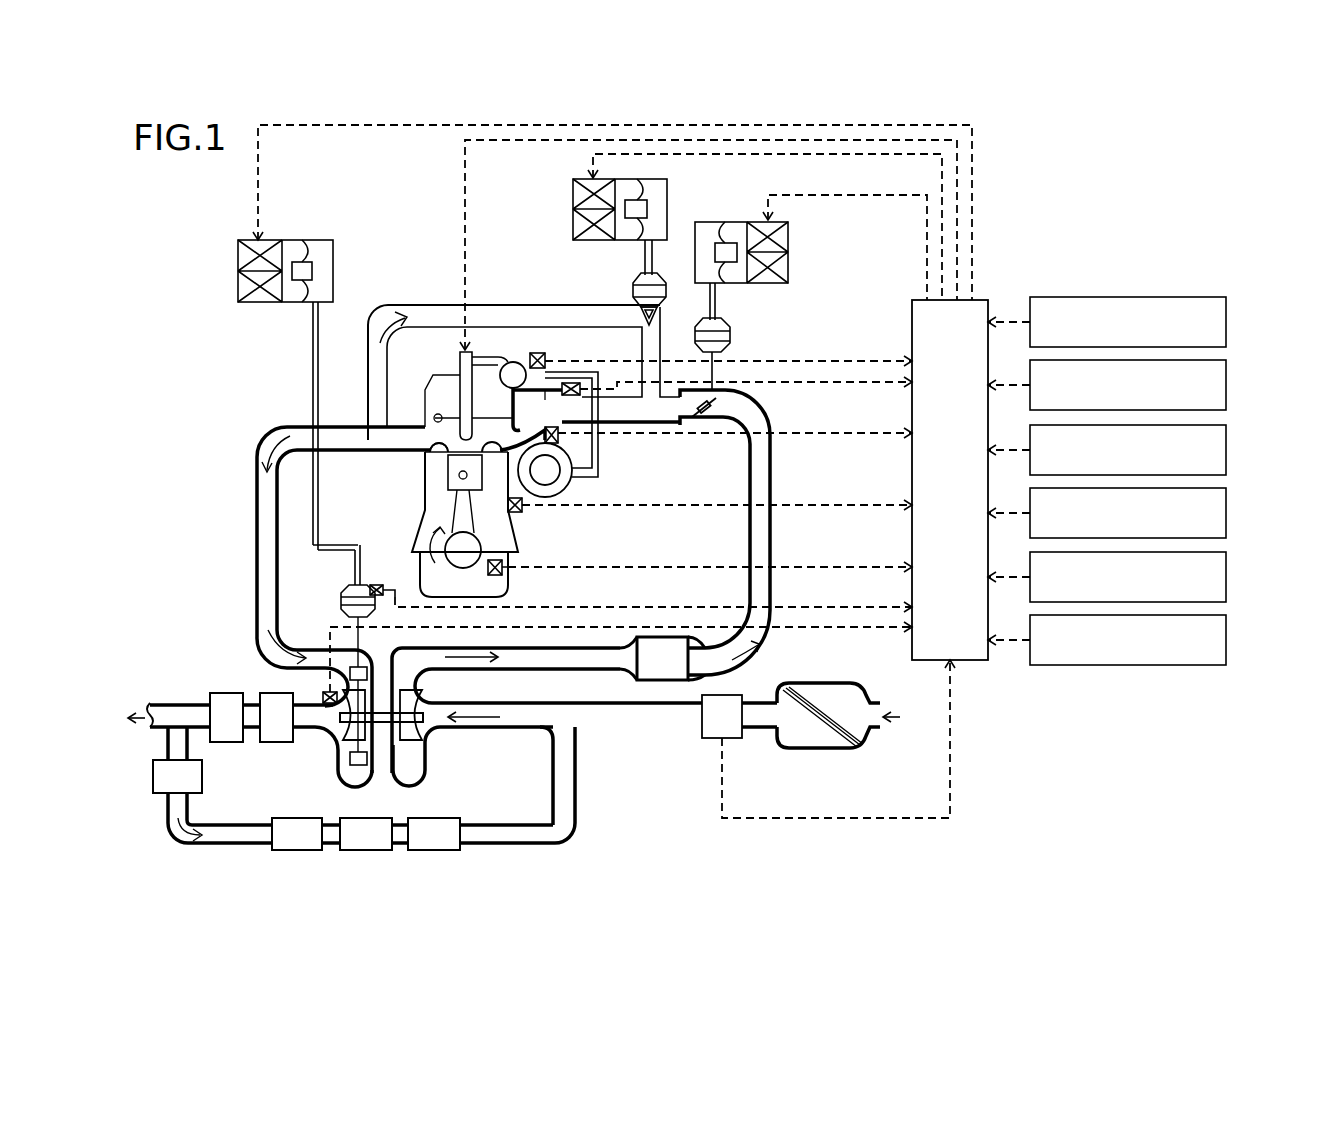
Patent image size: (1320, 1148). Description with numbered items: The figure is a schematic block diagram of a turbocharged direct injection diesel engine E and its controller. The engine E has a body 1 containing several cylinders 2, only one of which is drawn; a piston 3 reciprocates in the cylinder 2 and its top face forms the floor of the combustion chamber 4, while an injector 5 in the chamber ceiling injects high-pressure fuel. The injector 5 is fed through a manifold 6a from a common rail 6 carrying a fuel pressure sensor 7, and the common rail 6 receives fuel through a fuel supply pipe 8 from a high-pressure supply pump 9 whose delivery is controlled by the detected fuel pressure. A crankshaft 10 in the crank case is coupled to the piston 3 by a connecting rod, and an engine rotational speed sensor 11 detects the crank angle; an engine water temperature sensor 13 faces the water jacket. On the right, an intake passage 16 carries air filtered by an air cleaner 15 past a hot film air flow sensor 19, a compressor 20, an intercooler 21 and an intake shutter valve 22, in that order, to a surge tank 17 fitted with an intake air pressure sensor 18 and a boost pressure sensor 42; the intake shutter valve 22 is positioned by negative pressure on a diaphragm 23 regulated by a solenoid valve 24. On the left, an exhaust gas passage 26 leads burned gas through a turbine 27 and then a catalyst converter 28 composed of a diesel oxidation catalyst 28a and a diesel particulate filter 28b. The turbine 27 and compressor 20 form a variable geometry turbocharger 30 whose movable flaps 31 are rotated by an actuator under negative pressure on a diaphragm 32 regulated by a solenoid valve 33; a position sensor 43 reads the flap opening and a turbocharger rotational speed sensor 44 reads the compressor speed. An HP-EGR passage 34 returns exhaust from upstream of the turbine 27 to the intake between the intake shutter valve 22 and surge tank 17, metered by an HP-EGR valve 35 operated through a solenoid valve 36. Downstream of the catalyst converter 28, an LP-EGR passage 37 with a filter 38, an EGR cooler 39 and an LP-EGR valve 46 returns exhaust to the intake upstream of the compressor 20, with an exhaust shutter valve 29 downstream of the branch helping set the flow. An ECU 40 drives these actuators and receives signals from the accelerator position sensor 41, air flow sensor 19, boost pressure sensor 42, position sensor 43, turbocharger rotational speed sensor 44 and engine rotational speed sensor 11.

The body 1 is at (510, 578).
The cylinder 2 is at (483, 512).
The piston 3 is at (448, 478).
The combustion chamber 4 is at (448, 448).
The injector 5 is at (460, 358).
The common rail 6 is at (517, 362).
The manifold 6a is at (487, 355).
The fuel pressure sensor 7 is at (538, 352).
The fuel supply pipe 8 is at (600, 463).
The high-pressure supply pump 9 is at (572, 492).
The crankshaft 10 is at (440, 577).
The engine rotational speed sensor 11 is at (1228, 640).
The engine water temperature sensor 13 is at (522, 512).
The air cleaner 15 is at (825, 750).
The intake passage 16 is at (770, 468).
The surge tank 17 is at (545, 400).
The intake air pressure sensor 18 is at (560, 440).
The hot film air flow sensor 19 is at (1228, 385).
The compressor 20 is at (405, 728).
The intercooler 21 is at (637, 680).
The intake shutter valve 22 is at (716, 404).
The diaphragm 23 is at (728, 335).
The solenoid valve 24 is at (788, 248).
The exhaust gas passage 26 is at (257, 548).
The turbine 27 is at (345, 740).
The catalyst converter 28 is at (230, 757).
The diesel oxidation catalyst 28a is at (277, 745).
The diesel particulate filter 28b is at (228, 745).
The exhaust shutter valve 29 is at (165, 795).
The turbocharger 30 is at (379, 727).
The movable flap 31 is at (350, 672).
The diaphragm 32 is at (342, 600).
The solenoid valve 33 is at (262, 303).
The HP-EGR passage 34 is at (418, 310).
The HP-EGR valve 35 is at (633, 288).
The solenoid valve 36 is at (667, 185).
The LP-EGR passage 37 is at (225, 845).
The filter 38 is at (292, 852).
The EGR cooler 39 is at (368, 852).
The electronic control unit 40 is at (970, 665).
The accelerator position sensor 41 is at (1228, 322).
The boost pressure sensor 42 is at (1228, 450).
The position sensor 43 is at (1228, 513).
The turbocharger rotational speed sensor 44 is at (1228, 577).
The LP-EGR valve 46 is at (433, 852).
The engine E is at (228, 472).